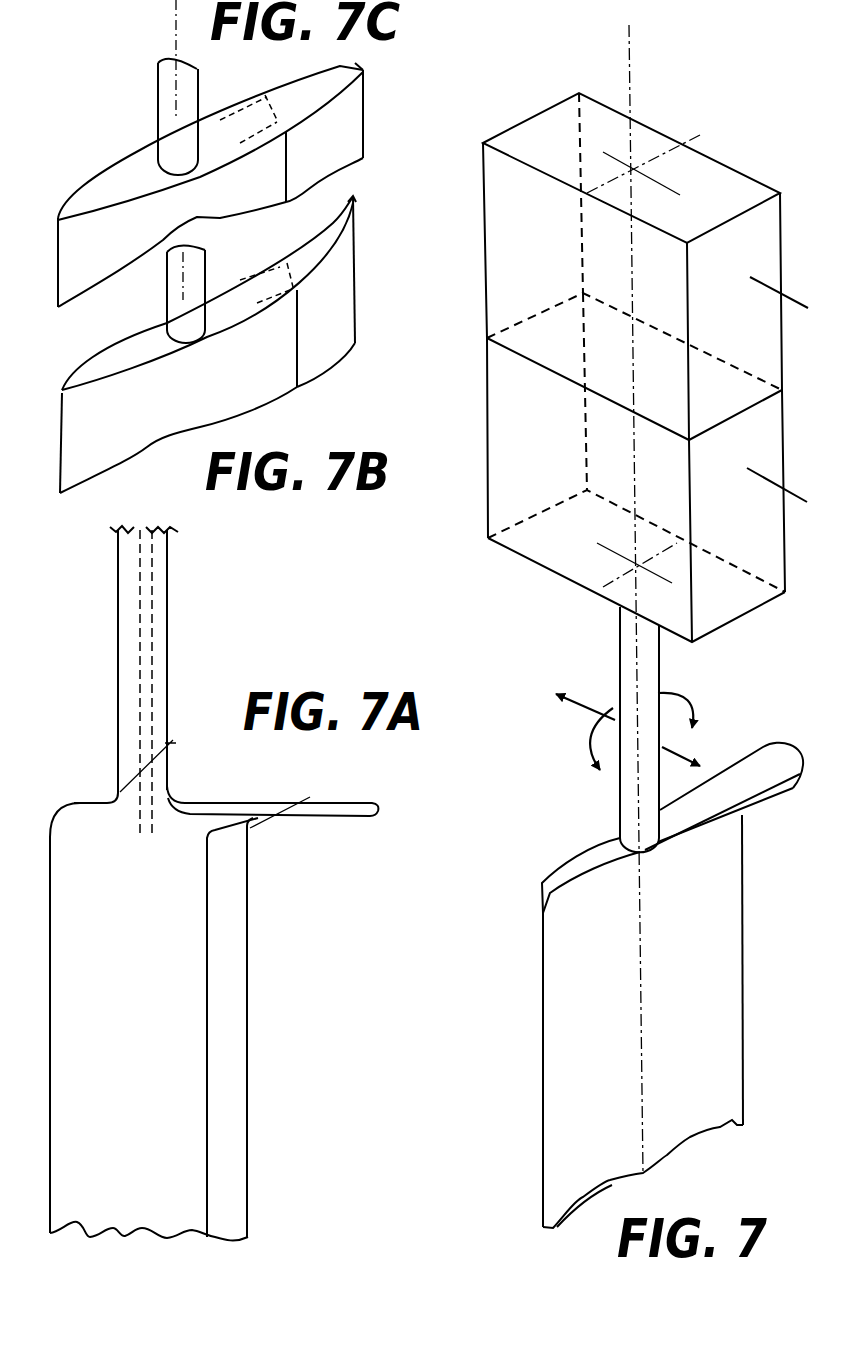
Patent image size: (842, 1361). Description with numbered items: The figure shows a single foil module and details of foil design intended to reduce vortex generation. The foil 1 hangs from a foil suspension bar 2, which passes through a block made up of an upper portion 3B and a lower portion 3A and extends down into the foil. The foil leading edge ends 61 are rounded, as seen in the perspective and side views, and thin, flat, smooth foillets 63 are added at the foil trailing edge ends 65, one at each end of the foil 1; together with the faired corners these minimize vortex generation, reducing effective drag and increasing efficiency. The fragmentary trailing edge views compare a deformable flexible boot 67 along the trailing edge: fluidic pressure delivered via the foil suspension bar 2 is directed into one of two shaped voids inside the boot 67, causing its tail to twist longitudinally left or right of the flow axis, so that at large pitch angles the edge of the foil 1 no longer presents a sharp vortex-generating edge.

In FIG. 7C, the foil 1 is at (58, 240).
In FIG. 7B, the foil 1 is at (58, 437).
In FIG. 7A, the foil 1 is at (47, 943).
In FIG. 7, the foil 1 is at (563, 1092).
In FIG. 7C, the foil suspension bar 2 is at (163, 93).
In FIG. 7B, the foil suspension bar 2 is at (177, 312).
In FIG. 7A, the foil suspension bar 2 is at (167, 595).
In FIG. 7, the foil suspension bar 2 is at (659, 678).
In FIG. 7, the lower die half 3A is at (487, 408).
In FIG. 7, the upper die half 3B is at (483, 260).
In FIG. 7A, the foil leading edge end 61 is at (77, 803).
In FIG. 7, the foil leading edge end 61 is at (542, 895).
In FIG. 7A, the foillet 63 is at (380, 810).
In FIG. 7, the foillet 63 is at (768, 787).
In FIG. 7A, the foil trailing edge end 65 is at (248, 875).
In FIG. 7C, the deformable flexible boot 67 is at (366, 70).
In FIG. 7B, the deformable flexible boot 67 is at (353, 196).